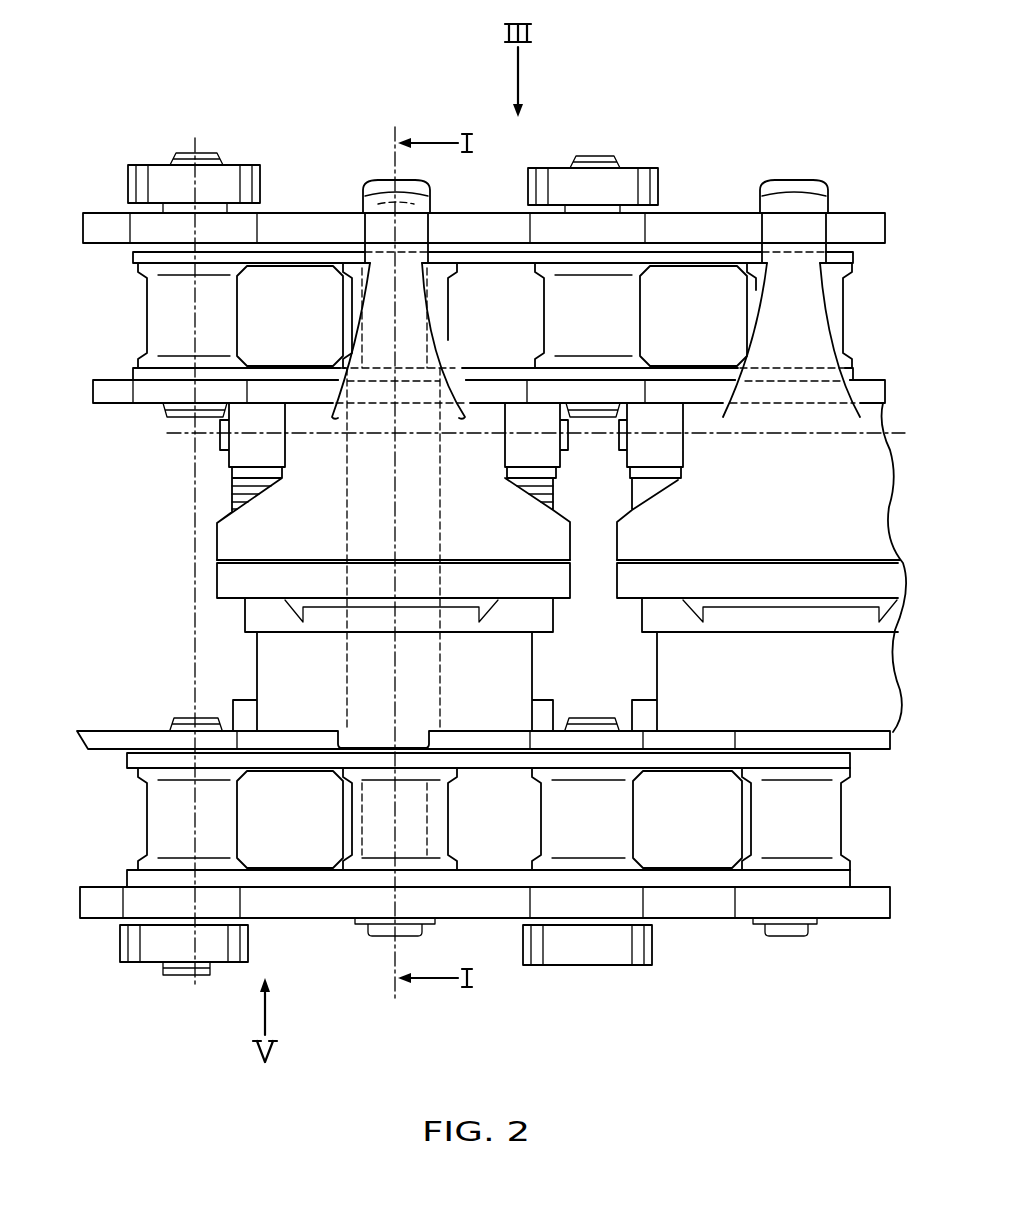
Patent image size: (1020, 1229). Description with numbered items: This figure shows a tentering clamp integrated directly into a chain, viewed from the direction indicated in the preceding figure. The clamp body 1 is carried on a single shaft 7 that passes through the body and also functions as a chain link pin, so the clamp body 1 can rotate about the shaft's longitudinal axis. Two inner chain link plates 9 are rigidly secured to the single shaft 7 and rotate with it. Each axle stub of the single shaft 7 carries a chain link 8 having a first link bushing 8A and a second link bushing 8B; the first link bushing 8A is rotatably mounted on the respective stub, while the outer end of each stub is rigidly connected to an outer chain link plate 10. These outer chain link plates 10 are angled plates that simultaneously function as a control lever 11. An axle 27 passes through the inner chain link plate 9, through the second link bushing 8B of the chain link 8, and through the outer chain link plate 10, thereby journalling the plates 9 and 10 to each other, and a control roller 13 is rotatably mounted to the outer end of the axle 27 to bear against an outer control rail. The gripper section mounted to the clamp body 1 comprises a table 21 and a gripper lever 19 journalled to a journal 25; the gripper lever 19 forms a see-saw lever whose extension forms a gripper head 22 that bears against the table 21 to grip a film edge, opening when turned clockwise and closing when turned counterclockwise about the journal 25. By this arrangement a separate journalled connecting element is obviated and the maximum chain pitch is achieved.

The clamp body 1 is at (200, 550).
The single shaft 7 is at (395, 522).
The chain link 8 is at (293, 262).
The first link bushing 8A is at (352, 307).
The second link bushing 8B is at (168, 322).
The inner chain link plate 9 is at (148, 402).
The outer chain link plate 10 is at (150, 232).
The control lever 11 is at (105, 230).
The control roller 13 is at (230, 185).
The gripper lever 19 is at (412, 322).
The table 21 is at (240, 582).
The gripper head 22 is at (243, 532).
The journal 25 is at (310, 433).
The axle 27 is at (195, 195).